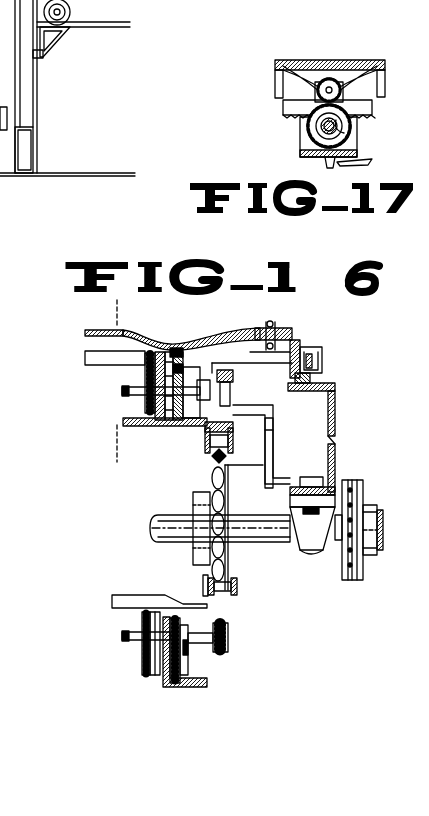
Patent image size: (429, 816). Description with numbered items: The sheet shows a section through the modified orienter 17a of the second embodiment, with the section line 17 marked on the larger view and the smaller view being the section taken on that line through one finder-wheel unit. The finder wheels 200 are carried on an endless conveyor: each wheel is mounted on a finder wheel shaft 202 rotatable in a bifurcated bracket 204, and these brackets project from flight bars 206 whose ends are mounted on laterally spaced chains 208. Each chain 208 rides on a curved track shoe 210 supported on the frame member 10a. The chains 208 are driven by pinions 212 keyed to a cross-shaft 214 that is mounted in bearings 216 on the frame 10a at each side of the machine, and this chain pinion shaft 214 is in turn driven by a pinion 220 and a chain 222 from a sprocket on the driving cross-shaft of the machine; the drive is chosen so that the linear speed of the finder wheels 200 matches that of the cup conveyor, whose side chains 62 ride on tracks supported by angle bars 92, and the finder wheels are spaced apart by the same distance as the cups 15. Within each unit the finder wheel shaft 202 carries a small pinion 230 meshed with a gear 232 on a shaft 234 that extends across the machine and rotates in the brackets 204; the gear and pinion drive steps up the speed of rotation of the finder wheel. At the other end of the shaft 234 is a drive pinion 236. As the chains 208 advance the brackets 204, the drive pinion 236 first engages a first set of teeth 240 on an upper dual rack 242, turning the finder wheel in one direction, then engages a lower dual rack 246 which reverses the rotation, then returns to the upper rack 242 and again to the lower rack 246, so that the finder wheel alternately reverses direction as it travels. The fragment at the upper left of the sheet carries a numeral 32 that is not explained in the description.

In FIG. 16, the frame member 10a is at (358, 438).
In FIG. 17, the cups 15 is at (280, 62).
In FIG. 16, the cups 15 is at (258, 331).
In FIG. 16, the section line 17 is at (112, 310).
In FIG. 16, the orienter 17a is at (148, 565).
In FIG. 17, the roller bracket 32 is at (97, 33).
In FIG. 16, the cup conveyor side chains 62 is at (311, 350).
In FIG. 16, the angle bars 92 is at (336, 391).
In FIG. 17, the finder wheels 200 is at (276, 76).
In FIG. 16, the finder wheels 200 is at (268, 333).
In FIG. 17, the finder wheel shafts 202 is at (333, 88).
In FIG. 16, the finder wheel shafts 202 is at (158, 351).
In FIG. 17, the bifurcated brackets 204 is at (303, 148).
In FIG. 16, the bifurcated brackets 204 is at (150, 410).
In FIG. 17, the flight bars 206 is at (323, 162).
In FIG. 16, the flight bars 206 is at (190, 426).
In FIG. 16, the chains 208 is at (226, 460).
In FIG. 16, the curved track shoe 210 is at (268, 450).
In FIG. 16, the pinions 212 is at (210, 550).
In FIG. 16, the cross-shaft 214 is at (152, 526).
In FIG. 16, the bearings 216 is at (316, 548).
In FIG. 16, the pinion 220 is at (352, 576).
In FIG. 16, the chain 222 is at (383, 468).
In FIG. 17, the small pinions 230 is at (326, 85).
In FIG. 16, the small pinions 230 is at (86, 348).
In FIG. 17, the gears 232 is at (352, 129).
In FIG. 16, the gears 232 is at (145, 372).
In FIG. 17, the shaft 234 is at (304, 126).
In FIG. 16, the shaft 234 is at (122, 391).
In FIG. 17, the drive pinion 236 is at (356, 152).
In FIG. 16, the drive pinion 236 is at (235, 395).
In FIG. 17, the first set of teeth 240 is at (292, 110).
In FIG. 17, the upper dual rack 242 is at (286, 100).
In FIG. 16, the upper dual rack 242 is at (208, 366).
In FIG. 16, the lower dual rack 246 is at (270, 420).